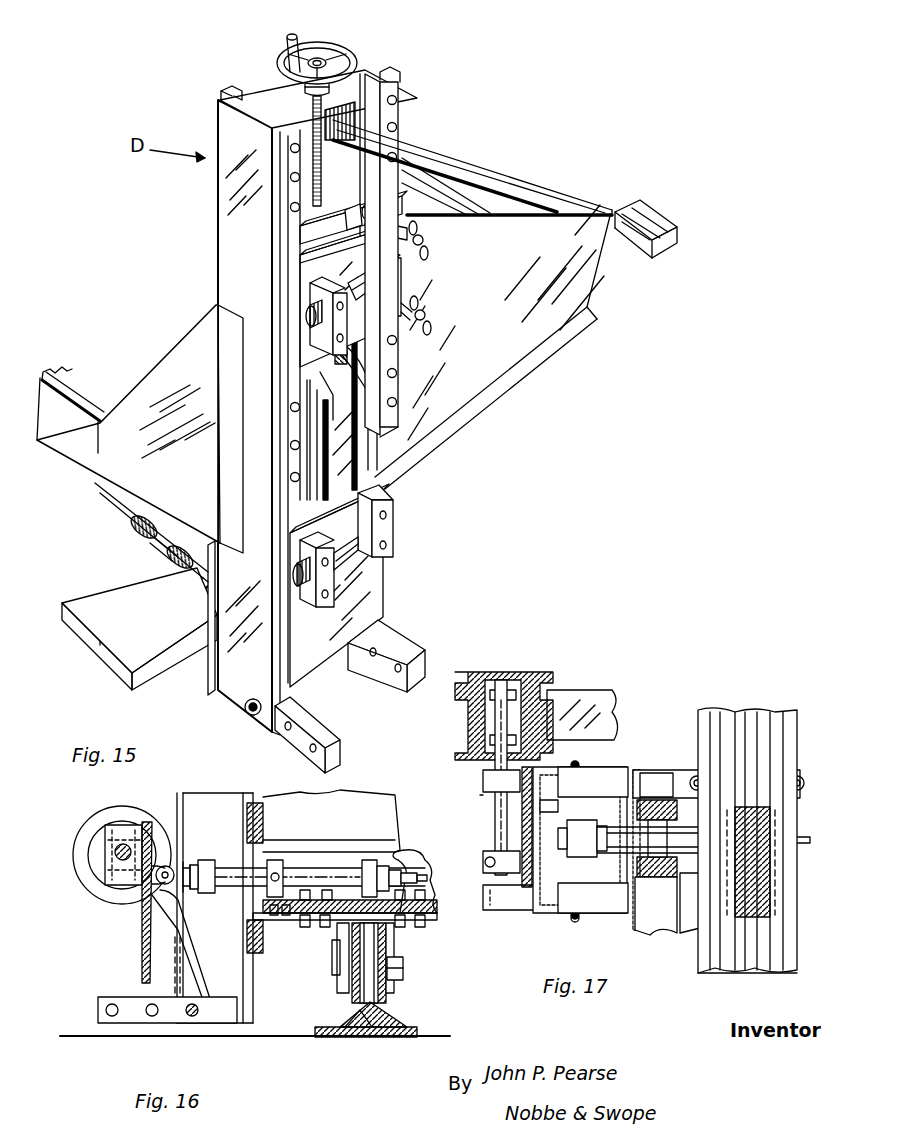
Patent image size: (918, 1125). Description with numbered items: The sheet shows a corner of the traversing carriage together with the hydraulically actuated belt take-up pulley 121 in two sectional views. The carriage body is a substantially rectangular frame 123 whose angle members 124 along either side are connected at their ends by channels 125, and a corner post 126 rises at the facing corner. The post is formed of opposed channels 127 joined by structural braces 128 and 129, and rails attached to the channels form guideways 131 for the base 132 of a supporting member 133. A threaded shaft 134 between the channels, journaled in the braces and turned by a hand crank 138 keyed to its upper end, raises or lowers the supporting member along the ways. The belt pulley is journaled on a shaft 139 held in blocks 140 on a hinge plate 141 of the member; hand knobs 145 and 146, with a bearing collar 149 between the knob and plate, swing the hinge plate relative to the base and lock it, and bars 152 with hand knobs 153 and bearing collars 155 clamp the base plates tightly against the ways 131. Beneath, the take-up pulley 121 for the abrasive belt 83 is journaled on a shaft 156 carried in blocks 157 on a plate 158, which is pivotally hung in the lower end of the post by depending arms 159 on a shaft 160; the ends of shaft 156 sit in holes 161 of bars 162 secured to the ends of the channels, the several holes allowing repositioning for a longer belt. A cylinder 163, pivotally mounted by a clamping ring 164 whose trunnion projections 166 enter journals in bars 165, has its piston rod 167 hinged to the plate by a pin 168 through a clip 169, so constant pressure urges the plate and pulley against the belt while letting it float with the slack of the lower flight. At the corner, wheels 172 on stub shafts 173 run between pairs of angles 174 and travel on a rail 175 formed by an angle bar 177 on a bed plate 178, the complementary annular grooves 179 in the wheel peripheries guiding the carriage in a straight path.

In FIG. 17, the abrasive belt 83 is at (585, 700).
In FIG. 16, the take-up pulley 121 is at (85, 877).
In FIG. 17, the take-up pulley 121 is at (530, 672).
In FIG. 15, the frame 123 is at (90, 400).
In FIG. 16, the frame 123 is at (305, 814).
In FIG. 17, the frame 123 is at (640, 770).
In FIG. 15, the angle members 124 is at (208, 600).
In FIG. 16, the angle members 124 is at (262, 828).
In FIG. 17, the angle members 124 is at (662, 920).
In FIG. 15, the channels 125 is at (528, 188).
In FIG. 16, the channels 125 is at (392, 860).
In FIG. 17, the channels 125 is at (668, 770).
In FIG. 15, the corner posts 126 is at (230, 207).
In FIG. 15, the channels 127 is at (226, 92).
In FIG. 16, the channels 127 is at (220, 805).
In FIG. 17, the channels 127 is at (613, 766).
In FIG. 15, the structural brace 128 is at (258, 104).
In FIG. 15, the structural brace 129 is at (360, 352).
In FIG. 15, the guideways 131 is at (385, 340).
In FIG. 15, the base 132 is at (404, 145).
In FIG. 15, the supporting member 133 is at (318, 274).
In FIG. 15, the threaded shaft 134 is at (362, 136).
In FIG. 15, the hand crank 138 is at (345, 55).
In FIG. 15, the shaft 139 is at (370, 283).
In FIG. 15, the blocks 140 is at (398, 270).
In FIG. 15, the hinge plate 141 is at (488, 186).
In FIG. 15, the hand knob 145 is at (430, 243).
In FIG. 15, the hand knob 146 is at (434, 312).
In FIG. 15, the bearing collar 149 is at (386, 222).
In FIG. 15, the bars 152 is at (322, 228).
In FIG. 15, the hand knobs 153 is at (432, 176).
In FIG. 15, the bearing collars 155 is at (410, 160).
In FIG. 15, the shaft 156 is at (338, 550).
In FIG. 16, the shaft 156 is at (120, 862).
In FIG. 17, the shaft 156 is at (497, 816).
In FIG. 15, the blocks 157 is at (386, 500).
In FIG. 16, the blocks 157 is at (132, 826).
In FIG. 17, the blocks 157 is at (483, 782).
In FIG. 15, the plate 158 is at (360, 580).
In FIG. 16, the plate 158 is at (142, 928).
In FIG. 17, the plate 158 is at (522, 878).
In FIG. 16, the depending arms 159 is at (183, 972).
In FIG. 17, the depending arms 159 is at (575, 790).
In FIG. 15, the shaft 160 is at (250, 716).
In FIG. 16, the shaft 160 is at (196, 1017).
In FIG. 17, the shaft 160 is at (574, 922).
In FIG. 15, the holes 161 is at (395, 670).
In FIG. 16, the holes 161 is at (118, 1016).
In FIG. 17, the holes 161 is at (490, 910).
In FIG. 15, the bars 162 is at (388, 638).
In FIG. 16, the bars 162 is at (98, 1008).
In FIG. 17, the bars 162 is at (483, 797).
In FIG. 16, the cylinder 163 is at (347, 870).
In FIG. 17, the cylinder 163 is at (697, 848).
In FIG. 16, the clamping ring 164 is at (290, 858).
In FIG. 17, the clamping ring 164 is at (680, 838).
In FIG. 16, the bars 165 is at (280, 915).
In FIG. 17, the bars 165 is at (698, 915).
In FIG. 16, the trunnion projections 166 is at (284, 870).
In FIG. 17, the trunnion projections 166 is at (650, 880).
In FIG. 16, the piston rod 167 is at (180, 882).
In FIG. 17, the piston rod 167 is at (580, 838).
In FIG. 16, the pin 168 is at (215, 835).
In FIG. 16, the clip 169 is at (185, 862).
In FIG. 17, the clip 169 is at (588, 856).
In FIG. 15, the wheels 172 is at (150, 546).
In FIG. 16, the wheels 172 is at (388, 955).
In FIG. 17, the wheels 172 is at (760, 815).
In FIG. 16, the stub shafts 173 is at (404, 970).
In FIG. 15, the angles 174 is at (130, 527).
In FIG. 16, the angles 174 is at (338, 970).
In FIG. 17, the angles 174 is at (700, 950).
In FIG. 15, the rail 175 is at (100, 640).
In FIG. 16, the rail 175 is at (380, 1010).
In FIG. 17, the rail 175 is at (757, 965).
In FIG. 16, the angle bar 177 is at (348, 1012).
In FIG. 15, the bed plate 178 is at (80, 622).
In FIG. 16, the bed plate 178 is at (417, 1032).
In FIG. 17, the bed plate 178 is at (705, 972).
In FIG. 16, the annular grooves 179 is at (365, 935).